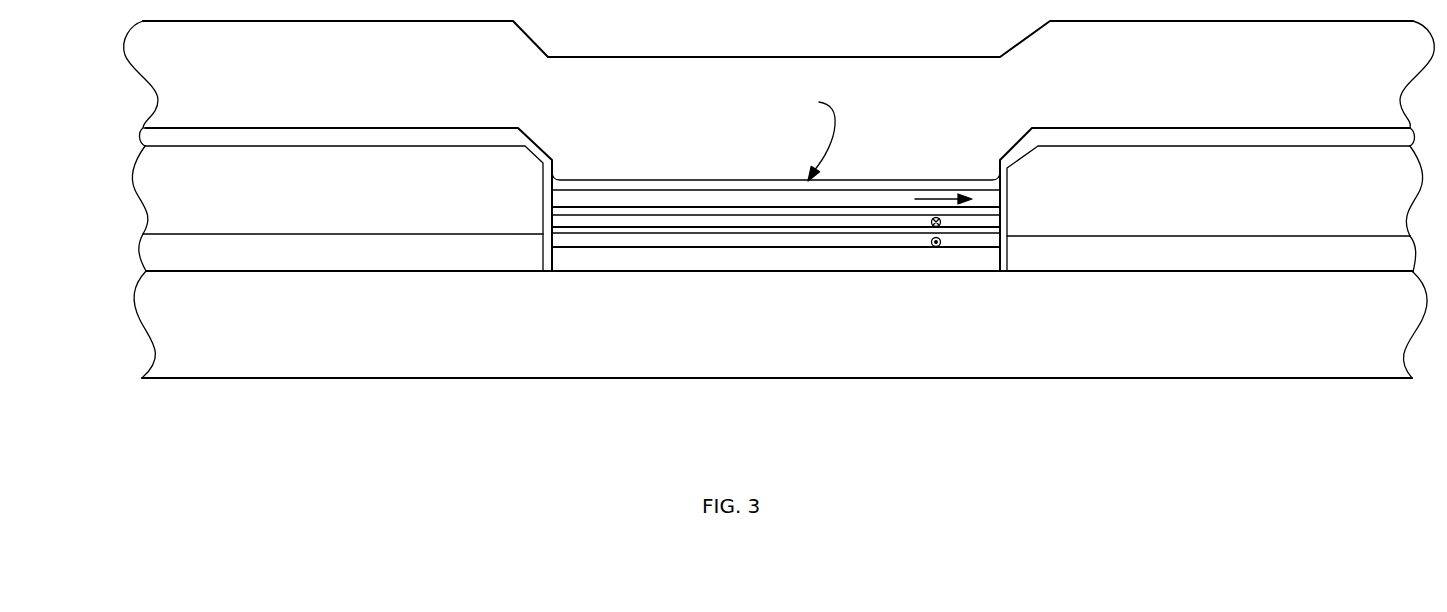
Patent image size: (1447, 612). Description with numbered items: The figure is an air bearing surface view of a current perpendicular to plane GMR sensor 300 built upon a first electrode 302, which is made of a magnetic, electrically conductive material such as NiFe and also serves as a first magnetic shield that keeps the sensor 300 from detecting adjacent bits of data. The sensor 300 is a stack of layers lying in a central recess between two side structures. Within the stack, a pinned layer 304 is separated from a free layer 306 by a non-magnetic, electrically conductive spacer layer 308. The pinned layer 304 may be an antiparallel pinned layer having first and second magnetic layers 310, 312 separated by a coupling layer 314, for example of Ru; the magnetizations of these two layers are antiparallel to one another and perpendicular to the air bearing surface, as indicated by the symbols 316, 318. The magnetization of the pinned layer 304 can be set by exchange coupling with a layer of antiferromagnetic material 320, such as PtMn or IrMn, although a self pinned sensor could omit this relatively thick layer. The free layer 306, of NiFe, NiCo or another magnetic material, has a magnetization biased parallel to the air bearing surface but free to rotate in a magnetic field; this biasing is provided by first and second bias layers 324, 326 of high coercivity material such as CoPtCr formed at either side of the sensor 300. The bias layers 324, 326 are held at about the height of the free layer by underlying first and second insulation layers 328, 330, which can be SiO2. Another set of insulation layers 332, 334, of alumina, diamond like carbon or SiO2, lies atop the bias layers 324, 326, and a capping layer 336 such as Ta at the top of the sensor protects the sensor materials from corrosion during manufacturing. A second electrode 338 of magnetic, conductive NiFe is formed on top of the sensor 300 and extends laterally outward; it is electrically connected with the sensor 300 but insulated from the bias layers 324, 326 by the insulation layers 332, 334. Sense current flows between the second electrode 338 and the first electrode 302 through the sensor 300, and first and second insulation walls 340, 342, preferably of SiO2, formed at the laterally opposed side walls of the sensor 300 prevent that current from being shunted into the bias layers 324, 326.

The current perpendicular to plane GMR sensor 300 is at (808, 136).
The first electrode 302 is at (820, 350).
The pinned layer 304 is at (1010, 217).
The free layer 306 is at (990, 203).
The spacer layer 308 is at (990, 213).
The first magnetic layer 310 is at (680, 240).
The second magnetic layer 312 is at (578, 222).
The coupling layer 314 is at (635, 228).
The magnetization symbol 316 is at (941, 243).
The magnetization symbol 318 is at (931, 221).
The layer of antiferromagnetic material 320 is at (748, 260).
The first bias layer 324 is at (1233, 176).
The second bias layer 326 is at (358, 174).
The first insulation layer 328 is at (1225, 254).
The second insulation layer 330 is at (372, 251).
The insulation layer 332 is at (1227, 140).
The insulation layer 334 is at (348, 137).
The capping layer 336 is at (722, 187).
The second electrode 338 is at (868, 106).
The first insulation wall 340 is at (996, 178).
The second insulation wall 342 is at (547, 159).